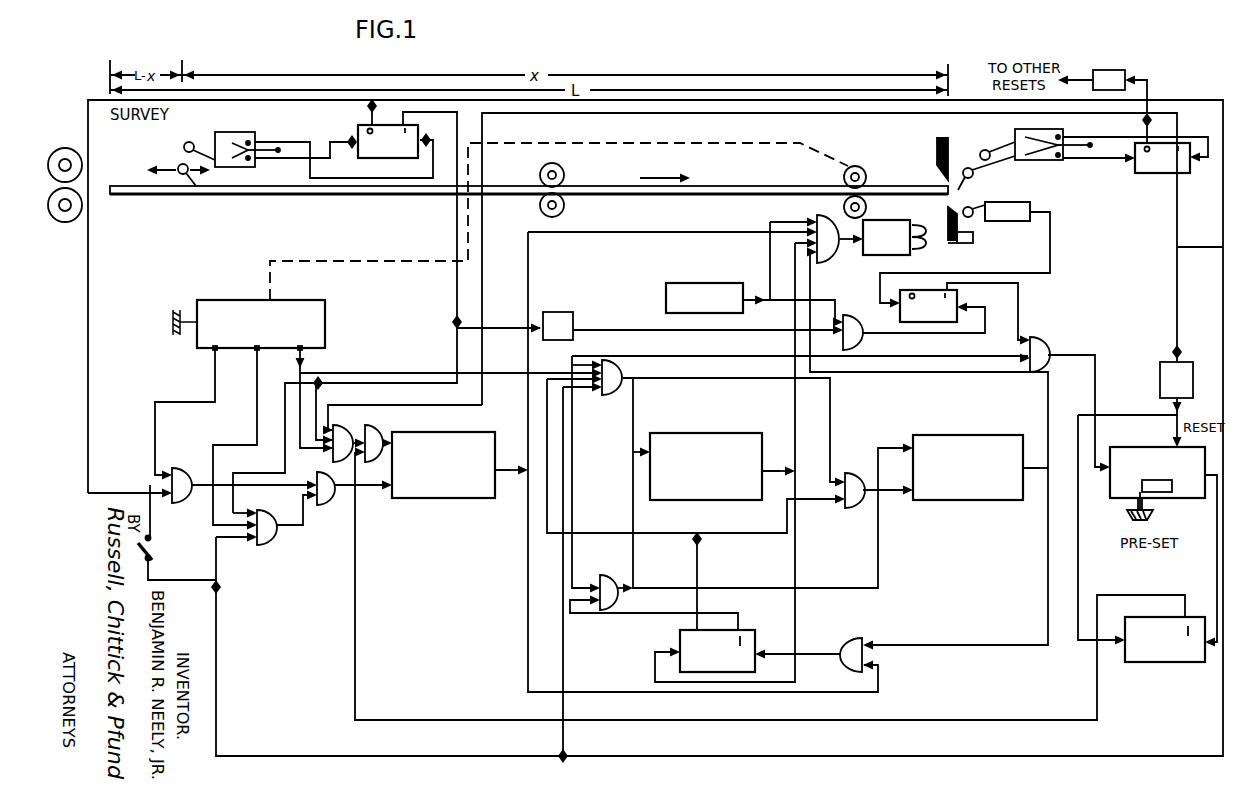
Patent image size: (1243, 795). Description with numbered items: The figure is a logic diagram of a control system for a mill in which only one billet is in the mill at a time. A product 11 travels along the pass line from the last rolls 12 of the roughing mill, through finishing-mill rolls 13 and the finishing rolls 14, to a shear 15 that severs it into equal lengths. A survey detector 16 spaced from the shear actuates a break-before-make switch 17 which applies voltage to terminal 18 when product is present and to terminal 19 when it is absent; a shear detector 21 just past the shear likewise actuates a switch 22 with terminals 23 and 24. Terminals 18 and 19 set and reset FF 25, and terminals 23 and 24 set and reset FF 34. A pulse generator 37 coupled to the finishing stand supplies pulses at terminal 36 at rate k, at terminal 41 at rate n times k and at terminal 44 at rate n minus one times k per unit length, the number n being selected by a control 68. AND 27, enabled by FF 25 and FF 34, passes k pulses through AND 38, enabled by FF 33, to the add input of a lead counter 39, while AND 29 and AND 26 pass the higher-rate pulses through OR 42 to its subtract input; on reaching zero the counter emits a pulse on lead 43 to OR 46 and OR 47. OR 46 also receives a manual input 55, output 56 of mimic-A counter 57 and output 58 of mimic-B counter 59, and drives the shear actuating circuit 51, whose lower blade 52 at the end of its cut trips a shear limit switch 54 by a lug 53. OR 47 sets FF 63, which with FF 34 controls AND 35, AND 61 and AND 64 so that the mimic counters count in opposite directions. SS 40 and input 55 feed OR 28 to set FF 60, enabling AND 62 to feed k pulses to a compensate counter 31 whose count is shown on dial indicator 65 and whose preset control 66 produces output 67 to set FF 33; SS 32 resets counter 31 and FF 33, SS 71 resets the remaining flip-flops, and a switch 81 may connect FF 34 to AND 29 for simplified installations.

The product 11 is at (146, 194).
The last rolls of roughing mill 12 is at (71, 148).
The rolls 13 is at (562, 171).
The finishing rolls 14 is at (851, 168).
The shear 15 is at (937, 148).
The survey detector 16 is at (178, 164).
The switch 17 is at (228, 132).
The terminal 18 is at (250, 142).
The terminal 19 is at (250, 160).
The shear detector 21 is at (960, 164).
The switch 22 is at (1015, 132).
The terminal 23 is at (1060, 138).
The terminal 24 is at (1053, 159).
The FF 25 is at (360, 158).
The AND 26 is at (272, 546).
The AND 27 is at (343, 432).
The OR 28 is at (856, 315).
The AND 29 is at (187, 502).
The compensate counter 31 is at (1120, 446).
The SS 32 is at (1189, 362).
The FF 33 is at (1153, 662).
The FF 34 is at (1172, 174).
The AND 35 is at (616, 394).
The terminal 36 is at (304, 346).
The pulse generator 37 is at (231, 300).
The AND 38 is at (373, 432).
The lead counter 39 is at (443, 450).
The SS 40 is at (560, 312).
The terminal 41 is at (200, 352).
The OR 42 is at (328, 506).
The lead 43 is at (507, 467).
The terminal 44 is at (256, 350).
The OR 46 is at (818, 217).
The OR 47 is at (842, 640).
The shear actuating circuit 51 is at (866, 257).
The lower blade 52 is at (952, 245).
The lug 53 is at (974, 238).
The shear limit switch 54 is at (1003, 202).
The manually operated input 55 is at (712, 283).
The output 56 is at (771, 463).
The mimic-A counter 57 is at (716, 434).
The output 58 is at (1030, 463).
The mimic-B counter 59 is at (981, 435).
The FF 60 is at (920, 323).
The AND 61 is at (608, 577).
The AND 62 is at (1045, 345).
The FF 63 is at (752, 634).
The AND 64 is at (857, 473).
The dial indicator 65 is at (1172, 493).
The control 66 is at (1126, 515).
The lead 67 is at (1211, 475).
The control 68 is at (174, 309).
The SS 71 is at (1118, 71).
The switch 81 is at (150, 550).